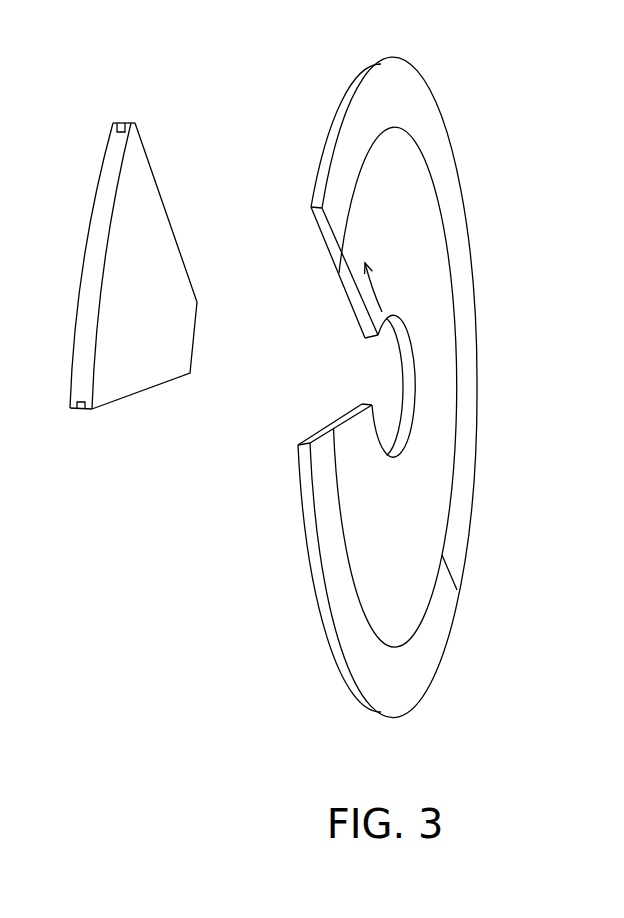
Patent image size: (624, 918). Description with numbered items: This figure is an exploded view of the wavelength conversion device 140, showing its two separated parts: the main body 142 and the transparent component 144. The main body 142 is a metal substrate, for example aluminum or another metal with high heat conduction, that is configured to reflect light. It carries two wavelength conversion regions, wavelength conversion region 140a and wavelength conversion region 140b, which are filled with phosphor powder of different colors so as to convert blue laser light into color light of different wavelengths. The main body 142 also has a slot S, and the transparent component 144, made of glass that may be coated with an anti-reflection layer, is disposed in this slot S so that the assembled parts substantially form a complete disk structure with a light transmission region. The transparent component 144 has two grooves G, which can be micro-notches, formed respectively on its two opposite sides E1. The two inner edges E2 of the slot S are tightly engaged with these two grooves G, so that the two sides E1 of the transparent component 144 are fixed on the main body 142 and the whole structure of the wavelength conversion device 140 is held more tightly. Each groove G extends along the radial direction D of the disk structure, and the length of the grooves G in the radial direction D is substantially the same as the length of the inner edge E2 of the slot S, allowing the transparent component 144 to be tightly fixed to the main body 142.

The wavelength conversion device 140 is at (429, 380).
The wavelength conversion region 140a is at (434, 131).
The wavelength conversion region 140b is at (416, 670).
The main body 142 is at (420, 207).
The transparent component 144 is at (148, 274).
The slot S is at (325, 274).
The grooves G is at (118, 120).
The sides of the transparent component E1 is at (162, 168).
The inner edges of the slot E2 is at (318, 229).
The radial direction D is at (322, 302).